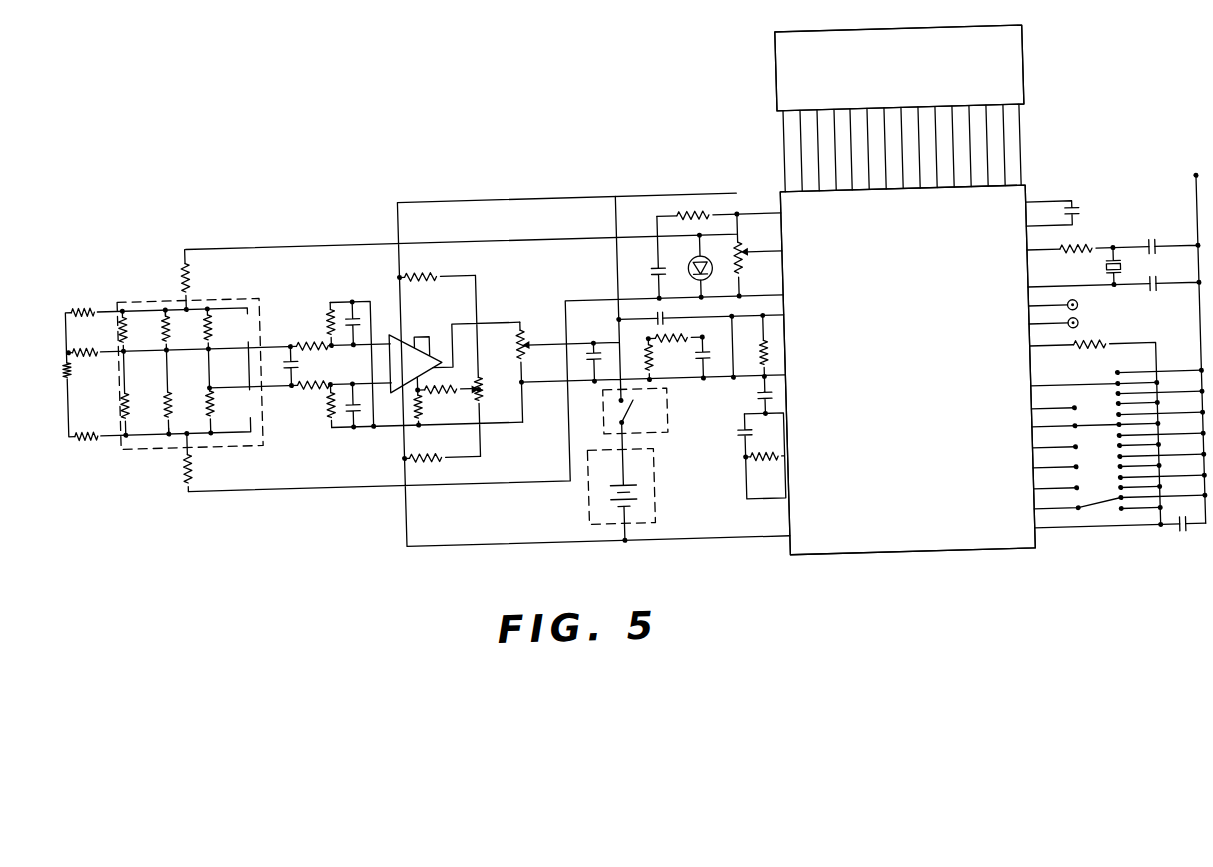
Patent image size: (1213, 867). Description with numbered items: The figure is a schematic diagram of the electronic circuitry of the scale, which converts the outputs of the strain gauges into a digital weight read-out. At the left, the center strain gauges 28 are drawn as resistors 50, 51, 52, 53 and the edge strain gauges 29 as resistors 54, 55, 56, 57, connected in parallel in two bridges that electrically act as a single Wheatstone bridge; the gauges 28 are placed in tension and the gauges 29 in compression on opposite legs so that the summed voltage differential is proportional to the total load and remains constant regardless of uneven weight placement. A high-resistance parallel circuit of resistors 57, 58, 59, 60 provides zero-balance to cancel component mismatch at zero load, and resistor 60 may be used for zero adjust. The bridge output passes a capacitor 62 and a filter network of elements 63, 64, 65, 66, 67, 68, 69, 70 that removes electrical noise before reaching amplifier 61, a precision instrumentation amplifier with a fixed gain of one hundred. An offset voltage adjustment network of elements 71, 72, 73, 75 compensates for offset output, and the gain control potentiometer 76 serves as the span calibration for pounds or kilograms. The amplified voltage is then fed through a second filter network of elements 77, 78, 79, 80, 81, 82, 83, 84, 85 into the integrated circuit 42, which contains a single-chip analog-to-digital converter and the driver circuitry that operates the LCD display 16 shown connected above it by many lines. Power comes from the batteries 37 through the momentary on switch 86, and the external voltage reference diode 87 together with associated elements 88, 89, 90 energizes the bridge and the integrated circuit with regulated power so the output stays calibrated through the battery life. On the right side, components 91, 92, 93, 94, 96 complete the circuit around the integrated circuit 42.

The LCD display 16 is at (904, 92).
The integrated circuit 42 is at (902, 361).
The resistor 53 is at (266, 319).
The center strain gauges 28 is at (188, 318).
The edge strain gauges 29 is at (170, 418).
The resistor 57 is at (100, 297).
The resistor 58 is at (88, 341).
The resistor 59 is at (98, 420).
The resistor 60 is at (70, 358).
The resistor 50 is at (129, 320).
The resistor 51 is at (172, 320).
The resistor 52 is at (214, 316).
The resistor 54 is at (130, 406).
The resistor 55 is at (172, 404).
The resistor 56 is at (214, 396).
The filter network element 63 is at (196, 268).
The filter network element 64 is at (192, 462).
The capacitor 62 is at (300, 360).
The filter network element 65 is at (331, 312).
The filter network element 66 is at (312, 334).
The filter network element 67 is at (318, 384).
The filter network element 68 is at (329, 412).
The filter network element 69 is at (358, 298).
The filter network element 70 is at (358, 420).
The amplifier 61 is at (416, 362).
The offset voltage adjustment network element 71 is at (448, 270).
The offset voltage adjustment network element 72 is at (421, 396).
The offset voltage adjustment network element 73 is at (450, 388).
The offset voltage adjustment network element 75 is at (440, 452).
The gain control potentiometer 76 is at (519, 347).
The filter network element 77 is at (593, 350).
The filter network element 78 is at (662, 316).
The filter network element 79 is at (635, 360).
The filter network element 80 is at (673, 353).
The filter network element 81 is at (714, 357).
The filter network element 82 is at (761, 358).
The filter network element 83 is at (758, 402).
The filter network element 84 is at (738, 436).
The filter network element 85 is at (764, 456).
The switch 86 is at (630, 408).
The batteries 37 is at (612, 488).
The voltage reference diode 87 is at (694, 266).
The voltage reference associated element 88 is at (654, 273).
The voltage reference associated element 89 is at (680, 216).
The voltage reference associated element 90 is at (748, 272).
The circuit component 91 is at (1086, 223).
The circuit component 92 is at (1090, 262).
The circuit component 93 is at (1156, 254).
The circuit component 94 is at (1100, 356).
The circuit component 96 is at (1180, 548).